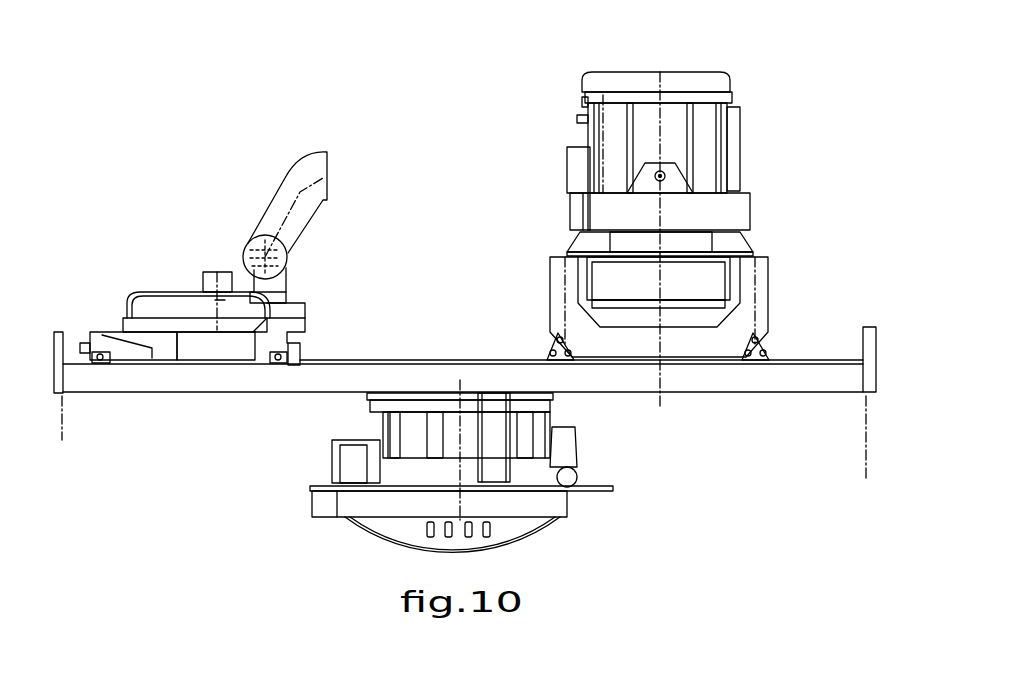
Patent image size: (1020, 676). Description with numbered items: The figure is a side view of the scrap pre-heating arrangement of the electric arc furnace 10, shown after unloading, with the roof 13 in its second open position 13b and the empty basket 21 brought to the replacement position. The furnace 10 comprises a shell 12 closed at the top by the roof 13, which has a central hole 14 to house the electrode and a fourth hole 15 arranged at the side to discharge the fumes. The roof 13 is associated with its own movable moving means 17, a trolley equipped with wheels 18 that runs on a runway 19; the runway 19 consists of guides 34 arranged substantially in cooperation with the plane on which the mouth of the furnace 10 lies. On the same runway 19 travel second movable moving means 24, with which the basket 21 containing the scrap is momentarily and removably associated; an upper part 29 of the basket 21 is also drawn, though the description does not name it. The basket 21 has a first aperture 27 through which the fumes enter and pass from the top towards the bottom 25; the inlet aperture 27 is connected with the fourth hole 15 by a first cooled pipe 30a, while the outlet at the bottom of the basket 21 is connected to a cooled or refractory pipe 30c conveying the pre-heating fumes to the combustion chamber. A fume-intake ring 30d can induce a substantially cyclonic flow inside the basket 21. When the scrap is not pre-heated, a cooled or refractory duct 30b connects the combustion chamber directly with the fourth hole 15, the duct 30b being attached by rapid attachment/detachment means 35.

The electric arc furnace 10 is at (599, 518).
The shell 12 is at (408, 506).
The roof 13 is at (173, 307).
The second open position 13b is at (176, 263).
The central hole 14 is at (212, 295).
The fourth hole 15 is at (275, 290).
The movable moving means 17 is at (170, 345).
The wheels 18 is at (762, 342).
The runway 19 is at (812, 352).
The basket 21 is at (700, 130).
The second movable moving means 24 is at (688, 340).
The bottom 25 is at (657, 322).
The first aperture 27 is at (577, 118).
The motor cap 29 is at (642, 88).
The first cooled pipe 30a is at (587, 108).
The cooled or refractory duct 30b is at (583, 182).
The cooled or refractory pipe 30c is at (733, 170).
The fume-intake ring 30d is at (580, 213).
The guides 34 is at (783, 378).
The rapid attachment/detachment means 35 is at (564, 154).